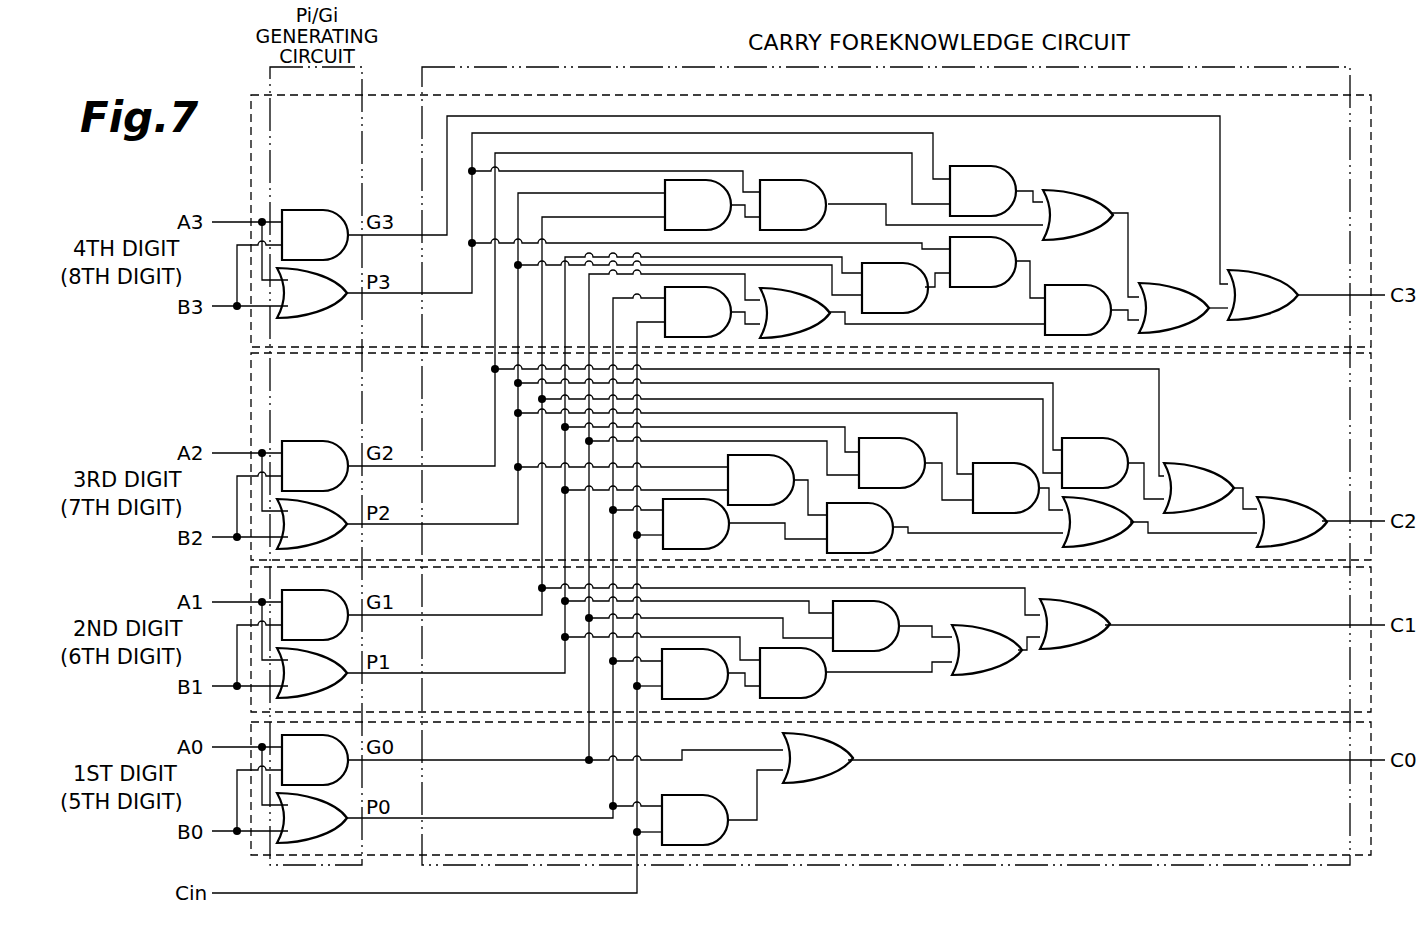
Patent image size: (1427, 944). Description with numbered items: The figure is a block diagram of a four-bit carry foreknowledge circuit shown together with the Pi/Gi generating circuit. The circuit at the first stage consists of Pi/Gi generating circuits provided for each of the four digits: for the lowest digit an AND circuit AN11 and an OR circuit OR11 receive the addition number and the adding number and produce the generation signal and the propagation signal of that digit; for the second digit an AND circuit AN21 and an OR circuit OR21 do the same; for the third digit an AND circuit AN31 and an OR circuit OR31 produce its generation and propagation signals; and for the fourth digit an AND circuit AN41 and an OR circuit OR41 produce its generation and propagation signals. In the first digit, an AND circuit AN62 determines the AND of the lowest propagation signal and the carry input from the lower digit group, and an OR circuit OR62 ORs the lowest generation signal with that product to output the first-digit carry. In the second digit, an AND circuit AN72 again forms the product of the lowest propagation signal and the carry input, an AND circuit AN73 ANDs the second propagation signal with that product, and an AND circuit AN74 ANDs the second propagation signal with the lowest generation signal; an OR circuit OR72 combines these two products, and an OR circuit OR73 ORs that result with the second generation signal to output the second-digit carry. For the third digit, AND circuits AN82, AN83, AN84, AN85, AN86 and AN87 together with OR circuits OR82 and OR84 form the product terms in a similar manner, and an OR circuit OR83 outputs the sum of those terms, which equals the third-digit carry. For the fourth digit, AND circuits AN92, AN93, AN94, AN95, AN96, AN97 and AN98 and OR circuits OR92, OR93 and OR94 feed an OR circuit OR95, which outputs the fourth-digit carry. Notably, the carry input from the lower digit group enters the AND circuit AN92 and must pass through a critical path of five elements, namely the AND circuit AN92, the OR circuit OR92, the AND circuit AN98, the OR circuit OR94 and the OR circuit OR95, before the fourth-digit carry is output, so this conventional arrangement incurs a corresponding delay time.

The AND circuit AN11 is at (315, 760).
The OR circuit OR11 is at (312, 818).
The AND circuit AN21 is at (315, 615).
The OR circuit OR21 is at (312, 673).
The AND circuit AN31 is at (315, 466).
The OR circuit OR31 is at (312, 524).
The AND circuit AN41 is at (315, 235).
The OR circuit OR41 is at (312, 293).
The AND circuit AN62 is at (695, 820).
The OR circuit OR62 is at (818, 758).
The AND circuit AN72 is at (695, 674).
The AND circuit AN73 is at (793, 673).
The AND circuit AN74 is at (866, 626).
The OR circuit OR72 is at (987, 650).
The OR circuit OR73 is at (1075, 624).
The AND circuit AN82 is at (696, 524).
The AND circuit AN83 is at (860, 528).
The AND circuit AN84 is at (761, 480).
The AND circuit AN85 is at (892, 463).
The AND circuit AN86 is at (1006, 488).
The AND circuit AN87 is at (1095, 463).
The OR circuit OR82 is at (1098, 522).
The OR circuit OR83 is at (1292, 522).
The OR circuit OR84 is at (1199, 488).
The AND circuit AN92 is at (698, 312).
The AND circuit AN93 is at (895, 288).
The AND circuit AN94 is at (983, 262).
The AND circuit AN95 is at (698, 205).
The AND circuit AN96 is at (793, 205).
The AND circuit AN97 is at (983, 191).
The AND circuit AN98 is at (1078, 310).
The OR circuit OR92 is at (795, 313).
The OR circuit OR93 is at (1078, 215).
The OR circuit OR94 is at (1174, 308).
The OR circuit OR95 is at (1263, 295).